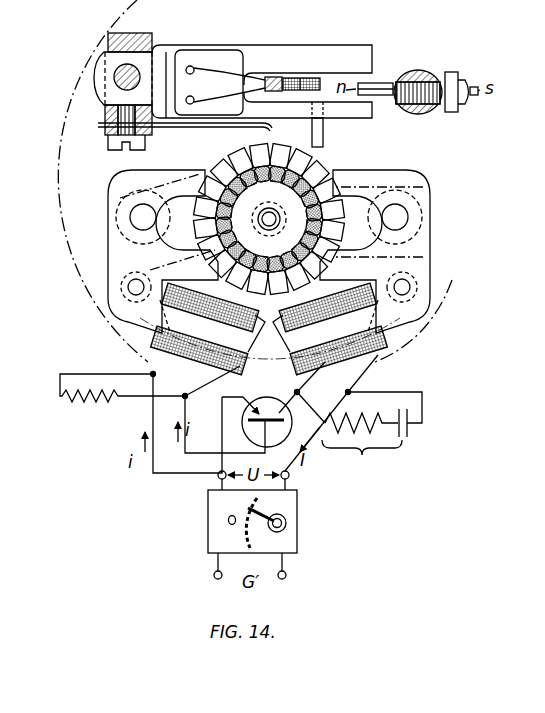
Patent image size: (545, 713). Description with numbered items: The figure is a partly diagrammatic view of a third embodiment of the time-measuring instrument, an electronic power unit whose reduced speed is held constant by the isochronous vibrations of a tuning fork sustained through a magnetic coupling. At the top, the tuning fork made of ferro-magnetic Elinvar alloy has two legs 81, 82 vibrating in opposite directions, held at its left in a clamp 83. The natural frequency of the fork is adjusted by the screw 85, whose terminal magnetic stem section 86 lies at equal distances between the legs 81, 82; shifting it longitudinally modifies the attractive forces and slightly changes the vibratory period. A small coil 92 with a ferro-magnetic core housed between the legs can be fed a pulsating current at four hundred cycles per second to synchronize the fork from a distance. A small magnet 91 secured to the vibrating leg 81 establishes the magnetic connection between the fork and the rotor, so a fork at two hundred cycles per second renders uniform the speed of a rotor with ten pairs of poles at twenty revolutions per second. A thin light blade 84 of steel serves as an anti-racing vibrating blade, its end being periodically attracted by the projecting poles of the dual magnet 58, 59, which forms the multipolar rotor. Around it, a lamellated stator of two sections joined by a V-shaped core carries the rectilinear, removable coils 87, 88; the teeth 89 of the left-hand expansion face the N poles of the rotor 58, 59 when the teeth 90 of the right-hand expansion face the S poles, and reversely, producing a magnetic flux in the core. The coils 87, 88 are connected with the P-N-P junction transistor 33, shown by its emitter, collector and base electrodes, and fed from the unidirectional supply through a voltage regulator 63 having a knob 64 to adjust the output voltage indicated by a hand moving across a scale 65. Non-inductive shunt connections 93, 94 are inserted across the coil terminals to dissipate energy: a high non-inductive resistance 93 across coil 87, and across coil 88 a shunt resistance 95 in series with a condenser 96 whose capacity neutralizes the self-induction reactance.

The clamp block 83 is at (163, 28).
The blade 84 is at (172, 130).
The tuning fork leg 82 is at (356, 58).
The tuning fork leg 81 is at (368, 116).
The coil 92 is at (255, 84).
The magnetic stem section 86 is at (406, 84).
The screw 85 is at (451, 106).
The small magnet 91 is at (325, 137).
The teeth 89 is at (190, 180).
The teeth 90 is at (345, 188).
The multipolar magnet part 58 is at (277, 219).
The multipolar magnet part 59 is at (318, 182).
The coil 87 is at (215, 352).
The coil 88 is at (335, 378).
The non-inductive shunt connection 93 is at (102, 398).
The junction transistor 33 is at (273, 396).
The non-inductive shunt connection 94 is at (387, 433).
The shunt resistance 95 is at (381, 416).
The condenser 96 is at (409, 416).
The voltage regulator 63 is at (251, 527).
The knob 64 is at (288, 523).
The scale 65 is at (246, 522).